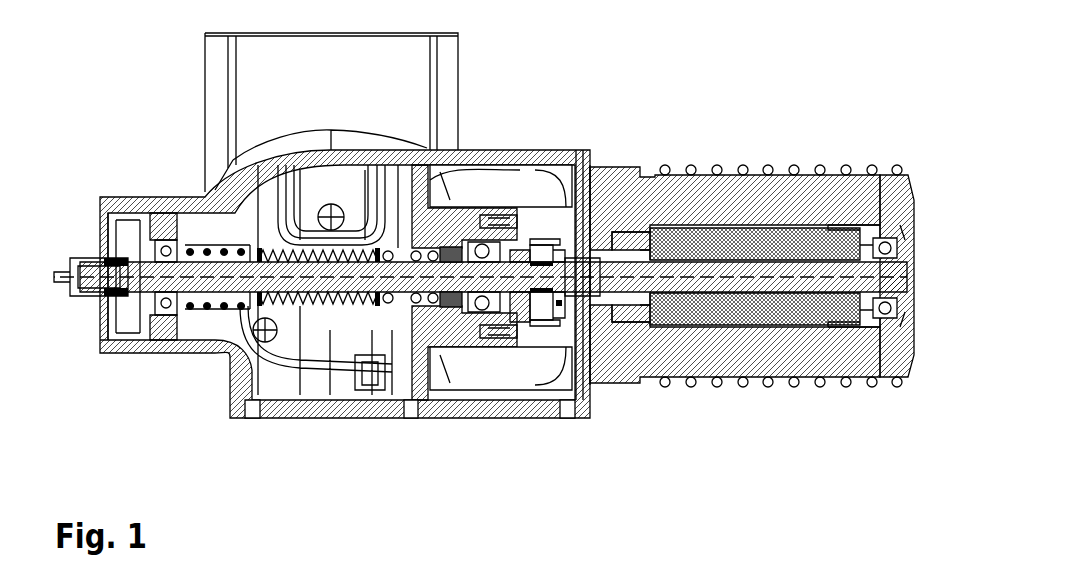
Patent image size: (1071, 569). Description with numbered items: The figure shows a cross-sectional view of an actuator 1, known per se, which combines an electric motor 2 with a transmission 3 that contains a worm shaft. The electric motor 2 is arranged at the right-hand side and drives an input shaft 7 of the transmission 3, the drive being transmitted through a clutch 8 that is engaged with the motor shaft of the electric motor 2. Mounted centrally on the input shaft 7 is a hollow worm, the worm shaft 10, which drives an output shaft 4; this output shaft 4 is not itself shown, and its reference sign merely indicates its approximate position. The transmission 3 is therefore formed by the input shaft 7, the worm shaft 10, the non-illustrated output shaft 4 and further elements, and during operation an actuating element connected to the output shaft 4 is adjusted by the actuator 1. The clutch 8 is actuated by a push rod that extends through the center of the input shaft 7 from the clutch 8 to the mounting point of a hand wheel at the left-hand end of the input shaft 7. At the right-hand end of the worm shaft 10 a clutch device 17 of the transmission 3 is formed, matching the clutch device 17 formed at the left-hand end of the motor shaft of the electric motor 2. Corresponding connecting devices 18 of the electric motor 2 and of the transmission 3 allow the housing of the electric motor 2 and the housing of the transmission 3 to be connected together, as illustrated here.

The actuator 1 is at (812, 108).
The electric motor 2 is at (697, 176).
The transmission 3 is at (395, 416).
The output shaft 4 is at (331, 330).
The input shaft 7 is at (483, 306).
The clutch 8 is at (545, 248).
The worm shaft 10 is at (300, 306).
The clutch device 17 is at (532, 330).
The connecting devices 18 is at (579, 158).